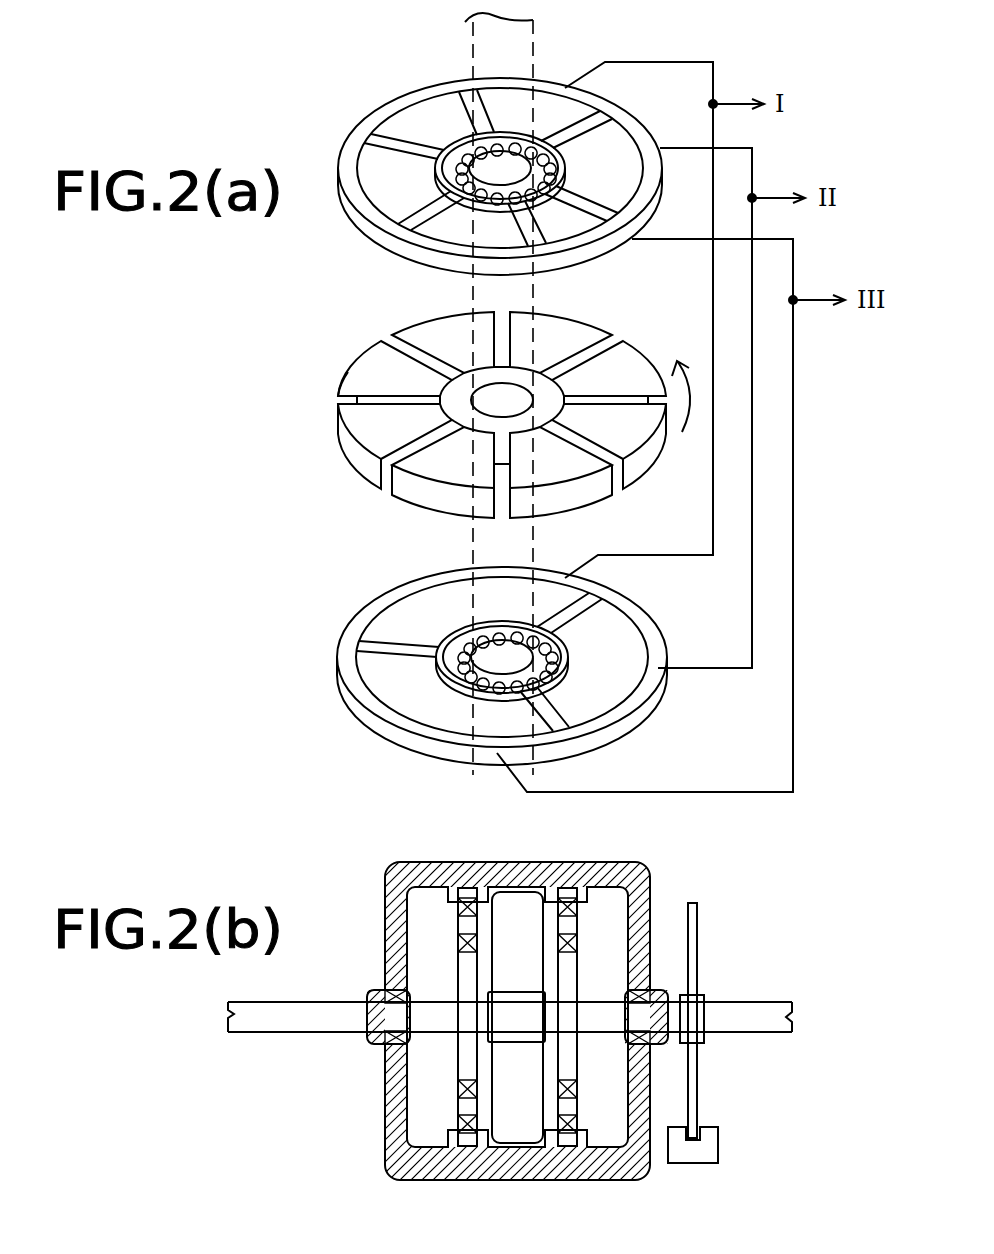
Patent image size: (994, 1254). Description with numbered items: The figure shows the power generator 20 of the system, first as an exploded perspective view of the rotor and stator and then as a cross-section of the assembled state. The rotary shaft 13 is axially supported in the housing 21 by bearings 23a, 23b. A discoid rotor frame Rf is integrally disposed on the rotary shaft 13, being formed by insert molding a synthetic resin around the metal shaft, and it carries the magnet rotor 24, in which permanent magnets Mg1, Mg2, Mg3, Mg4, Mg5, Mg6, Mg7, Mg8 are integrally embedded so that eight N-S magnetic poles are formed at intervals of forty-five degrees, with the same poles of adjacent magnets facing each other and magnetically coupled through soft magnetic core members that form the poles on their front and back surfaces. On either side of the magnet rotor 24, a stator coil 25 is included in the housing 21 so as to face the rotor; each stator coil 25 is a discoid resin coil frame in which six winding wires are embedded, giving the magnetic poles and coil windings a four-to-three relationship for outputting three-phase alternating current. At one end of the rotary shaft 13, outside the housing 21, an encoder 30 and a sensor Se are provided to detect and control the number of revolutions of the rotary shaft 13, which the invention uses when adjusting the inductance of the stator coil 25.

In FIG. 2A, the rotary shaft 13 is at (487, 66).
In FIG. 2B, the rotary shaft 13 is at (300, 1022).
In FIG. 2A, the stator coil 25 is at (365, 124).
In FIG. 2B, the stator coil 25 is at (470, 886).
In FIG. 2A, the magnet rotor 24 is at (462, 398).
In FIG. 2B, the magnet rotor 24 is at (520, 902).
In FIG. 2A, the permanent magnet Mg1 is at (502, 323).
In FIG. 2A, the permanent magnet Mg2 is at (597, 323).
In FIG. 2A, the permanent magnet Mg3 is at (628, 398).
In FIG. 2A, the permanent magnet Mg4 is at (628, 482).
In FIG. 2A, the permanent magnet Mg5 is at (502, 490).
In FIG. 2A, the permanent magnet Mg6 is at (395, 458).
In FIG. 2A, the permanent magnet Mg7 is at (360, 392).
In FIG. 2A, the permanent magnet Mg8 is at (430, 342).
In FIG. 2A, the rotor frame Rf is at (345, 378).
In FIG. 2B, the power generator 20 is at (515, 1000).
In FIG. 2B, the housing 21 is at (645, 886).
In FIG. 2B, the bearing 23a is at (370, 1045).
In FIG. 2B, the bearing 23b is at (655, 1044).
In FIG. 2B, the encoder 30 is at (698, 962).
In FIG. 2B, the sensor Se is at (718, 1150).